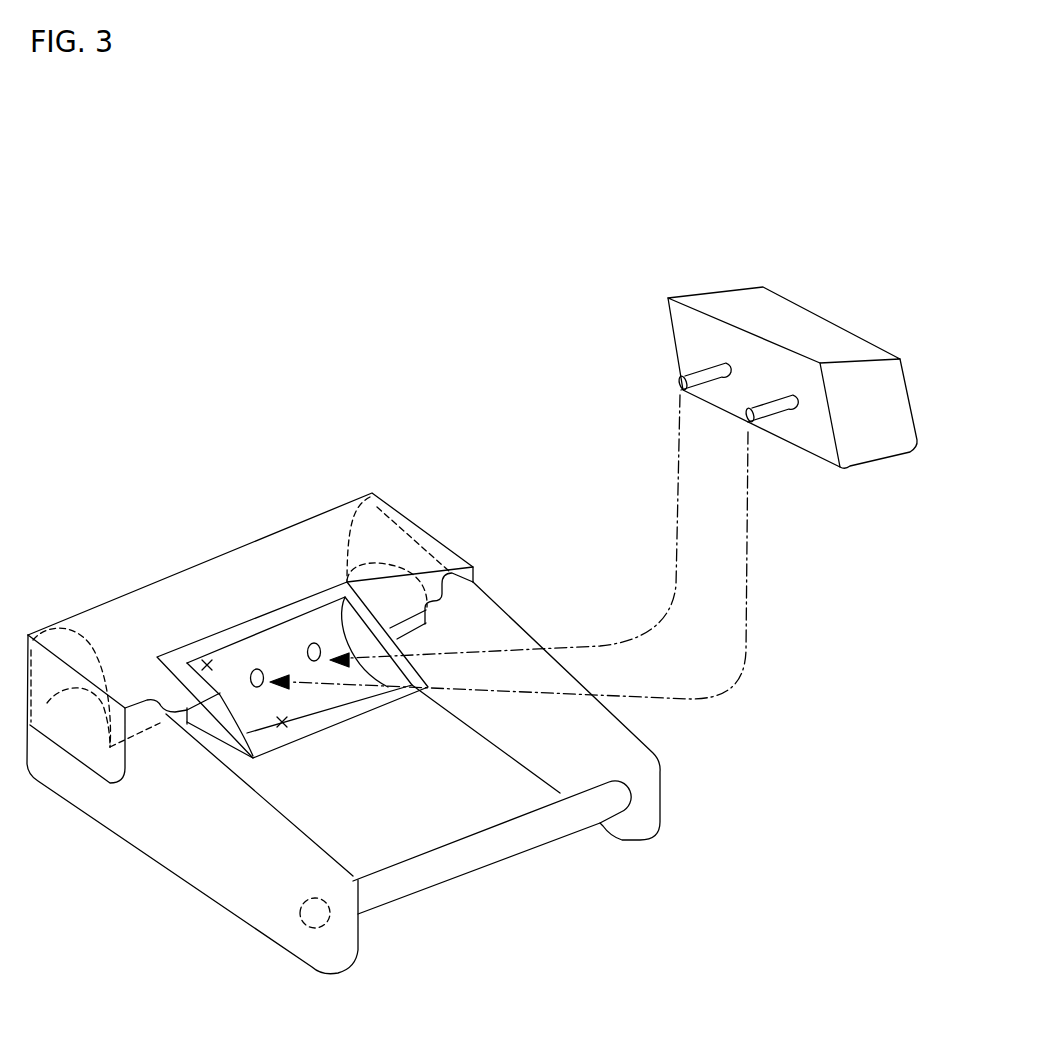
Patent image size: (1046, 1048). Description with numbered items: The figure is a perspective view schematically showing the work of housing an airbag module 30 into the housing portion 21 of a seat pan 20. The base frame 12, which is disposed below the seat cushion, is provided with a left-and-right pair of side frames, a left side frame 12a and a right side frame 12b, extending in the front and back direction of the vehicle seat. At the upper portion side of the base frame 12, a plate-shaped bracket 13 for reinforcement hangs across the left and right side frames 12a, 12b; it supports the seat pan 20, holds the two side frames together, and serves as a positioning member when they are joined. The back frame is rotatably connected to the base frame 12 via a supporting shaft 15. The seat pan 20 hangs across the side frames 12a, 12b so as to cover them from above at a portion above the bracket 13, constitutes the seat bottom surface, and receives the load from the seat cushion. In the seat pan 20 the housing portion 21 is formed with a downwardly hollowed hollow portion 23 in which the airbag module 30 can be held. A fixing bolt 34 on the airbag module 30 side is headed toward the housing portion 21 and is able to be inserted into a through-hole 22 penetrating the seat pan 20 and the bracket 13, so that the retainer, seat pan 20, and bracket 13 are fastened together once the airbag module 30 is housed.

The base frame 12 is at (203, 892).
The left side frame 12a is at (150, 825).
The right side frame 12b is at (475, 620).
The bracket 13 is at (147, 672).
The supporting shaft 15 is at (517, 835).
The seat pan 20 is at (336, 508).
The housing portion 21 is at (207, 665).
The through-hole 22 is at (309, 645).
The hollow portion 23 is at (282, 725).
The airbag module 30 is at (723, 290).
The fixing bolt 34 is at (700, 380).